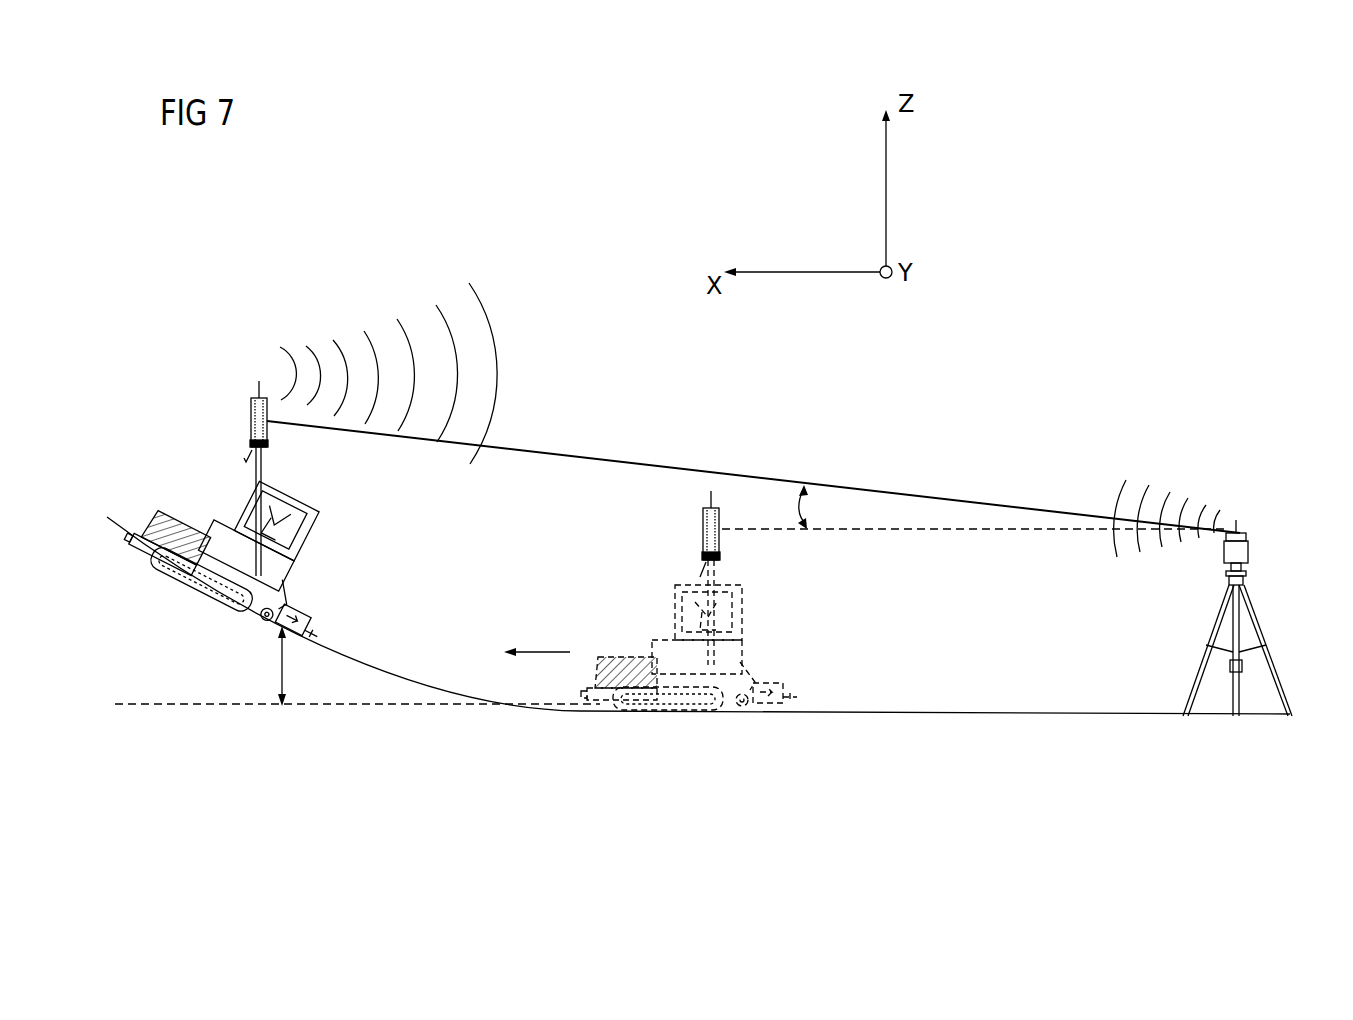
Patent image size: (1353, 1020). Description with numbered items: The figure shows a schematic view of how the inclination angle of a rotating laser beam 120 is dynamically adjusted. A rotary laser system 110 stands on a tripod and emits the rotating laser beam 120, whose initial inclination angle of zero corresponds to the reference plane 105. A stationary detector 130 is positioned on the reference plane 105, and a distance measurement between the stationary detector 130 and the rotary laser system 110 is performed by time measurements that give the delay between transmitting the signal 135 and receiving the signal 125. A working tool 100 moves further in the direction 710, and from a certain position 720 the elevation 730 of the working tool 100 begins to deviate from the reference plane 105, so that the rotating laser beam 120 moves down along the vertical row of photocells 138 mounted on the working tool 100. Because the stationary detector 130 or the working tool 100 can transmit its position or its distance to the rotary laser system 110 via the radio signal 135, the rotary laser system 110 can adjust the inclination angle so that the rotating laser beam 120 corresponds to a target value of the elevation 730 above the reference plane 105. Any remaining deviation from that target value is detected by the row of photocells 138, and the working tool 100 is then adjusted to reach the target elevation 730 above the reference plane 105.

The working tool 100 is at (200, 476).
The reference plane 105 is at (1045, 718).
The rotary laser system 110 is at (1266, 528).
The rotating laser beam 120 is at (872, 490).
The received signal 125 is at (1240, 477).
The stationary detector 130 is at (703, 515).
The radio signal 135 is at (308, 302).
The vertical row of photocells 138 is at (251, 420).
The direction 710 is at (542, 653).
The certain position 720 is at (727, 714).
The elevation 730 is at (280, 667).